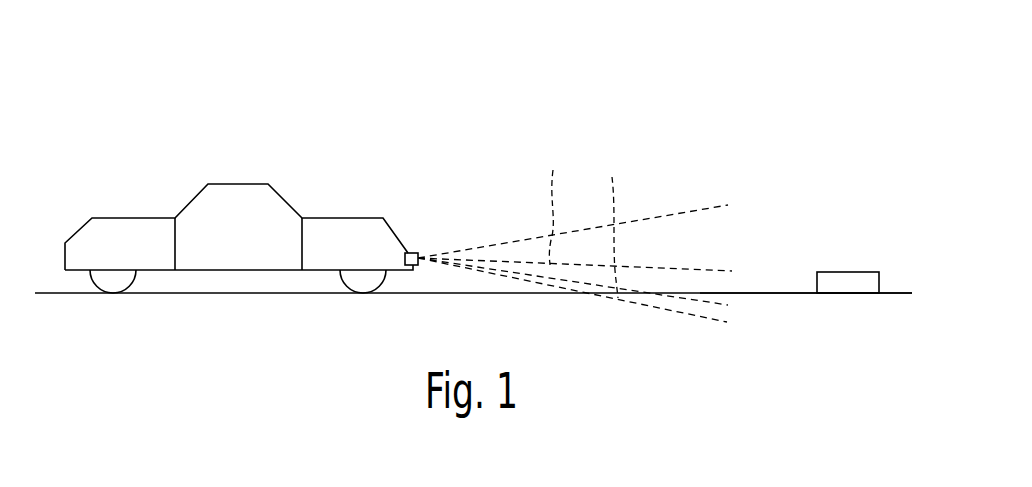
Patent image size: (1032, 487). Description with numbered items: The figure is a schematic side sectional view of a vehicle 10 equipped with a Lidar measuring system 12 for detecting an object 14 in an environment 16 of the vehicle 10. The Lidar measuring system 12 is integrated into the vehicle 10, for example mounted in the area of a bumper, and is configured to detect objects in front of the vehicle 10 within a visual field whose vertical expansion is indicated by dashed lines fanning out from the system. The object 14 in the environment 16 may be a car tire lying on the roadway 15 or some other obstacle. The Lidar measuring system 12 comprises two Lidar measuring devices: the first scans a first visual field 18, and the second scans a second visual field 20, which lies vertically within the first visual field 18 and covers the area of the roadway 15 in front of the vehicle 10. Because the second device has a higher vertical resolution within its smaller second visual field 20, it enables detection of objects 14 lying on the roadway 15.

The vehicle 10 is at (242, 184).
The Lidar measuring system 12 is at (413, 253).
The object 14 is at (848, 272).
The roadway 15 is at (778, 293).
The environment 16 is at (762, 112).
The first visual field 18 is at (568, 284).
The second visual field 20 is at (648, 215).